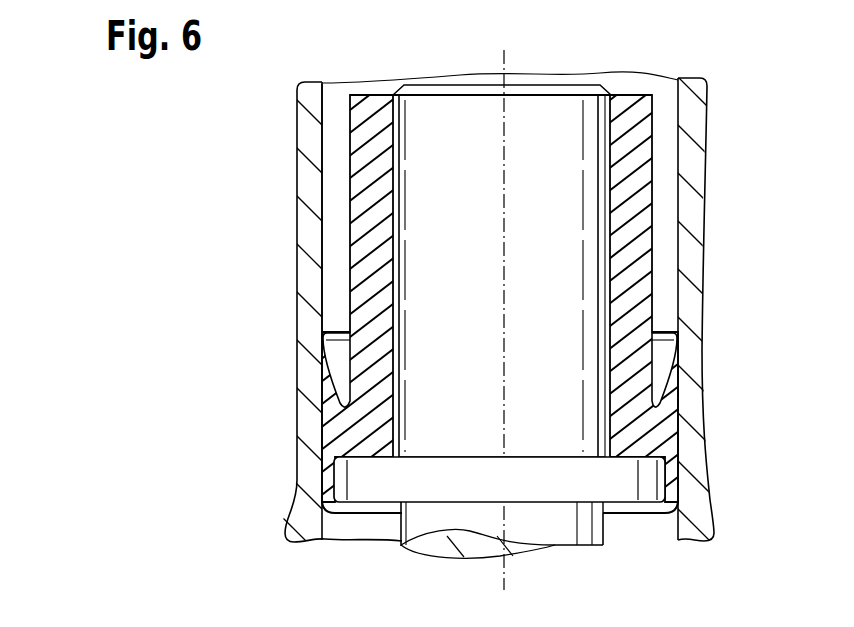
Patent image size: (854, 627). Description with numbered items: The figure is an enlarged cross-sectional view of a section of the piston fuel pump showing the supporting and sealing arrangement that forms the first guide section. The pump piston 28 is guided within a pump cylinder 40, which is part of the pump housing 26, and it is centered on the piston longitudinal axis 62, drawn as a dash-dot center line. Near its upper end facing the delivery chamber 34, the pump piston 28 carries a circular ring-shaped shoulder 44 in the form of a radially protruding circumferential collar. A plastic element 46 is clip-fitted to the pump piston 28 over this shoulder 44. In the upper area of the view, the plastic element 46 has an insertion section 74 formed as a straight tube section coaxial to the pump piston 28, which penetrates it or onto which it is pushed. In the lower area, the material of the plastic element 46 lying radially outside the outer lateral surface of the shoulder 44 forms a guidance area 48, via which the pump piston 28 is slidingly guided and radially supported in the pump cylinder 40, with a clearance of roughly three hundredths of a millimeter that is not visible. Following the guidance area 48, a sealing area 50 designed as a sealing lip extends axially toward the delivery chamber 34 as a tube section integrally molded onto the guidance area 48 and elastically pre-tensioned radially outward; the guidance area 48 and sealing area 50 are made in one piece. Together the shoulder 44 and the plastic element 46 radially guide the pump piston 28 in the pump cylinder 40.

The pump housing 26 is at (688, 222).
The pump piston 28 is at (581, 522).
The delivery chamber 34 is at (391, 92).
The pump cylinder 40 is at (322, 216).
The shoulder 44 is at (358, 472).
The plastic element 46 is at (655, 290).
The guidance area 48 is at (668, 478).
The sealing area 50 is at (322, 364).
The piston longitudinal axis 62 is at (505, 122).
The insertion section 74 is at (612, 173).